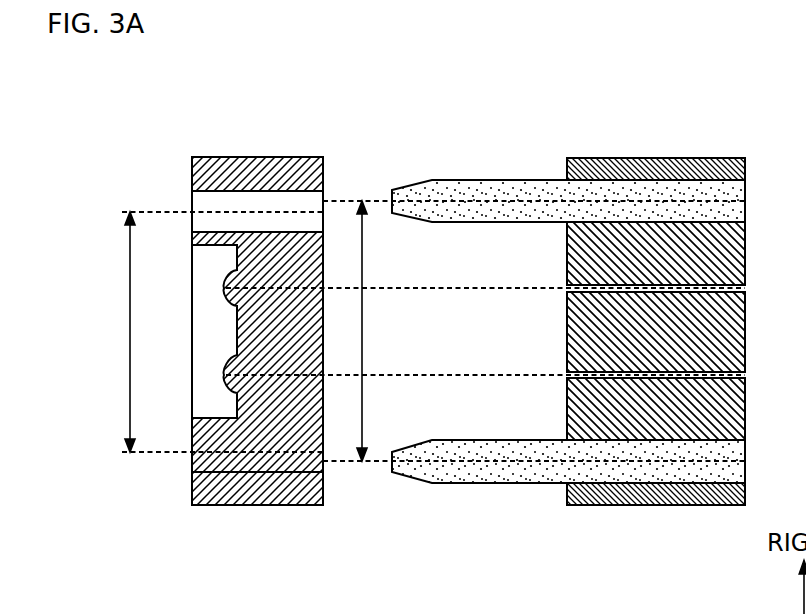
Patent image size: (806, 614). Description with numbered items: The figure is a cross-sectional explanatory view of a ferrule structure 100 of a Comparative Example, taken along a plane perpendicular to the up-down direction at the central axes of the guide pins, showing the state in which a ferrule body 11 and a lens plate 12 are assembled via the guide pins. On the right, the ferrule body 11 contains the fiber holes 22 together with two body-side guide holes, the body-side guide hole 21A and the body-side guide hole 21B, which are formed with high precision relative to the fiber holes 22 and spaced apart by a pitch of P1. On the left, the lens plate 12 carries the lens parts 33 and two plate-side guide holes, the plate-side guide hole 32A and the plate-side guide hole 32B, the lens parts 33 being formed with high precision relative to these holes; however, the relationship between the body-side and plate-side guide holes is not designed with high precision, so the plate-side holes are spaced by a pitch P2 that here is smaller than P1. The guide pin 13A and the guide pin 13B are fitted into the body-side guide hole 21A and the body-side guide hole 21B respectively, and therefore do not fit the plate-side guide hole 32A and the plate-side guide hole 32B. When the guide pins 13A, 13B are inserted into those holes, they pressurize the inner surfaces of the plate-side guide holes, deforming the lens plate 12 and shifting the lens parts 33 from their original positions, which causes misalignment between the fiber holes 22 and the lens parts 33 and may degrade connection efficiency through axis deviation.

The ferrule structure 100 is at (365, 110).
The ferrule body 11 is at (728, 158).
The lens plate 12 is at (228, 157).
The guide pin 13A is at (507, 190).
The guide pin 13B is at (505, 472).
The body-side guide hole 21A is at (677, 180).
The body-side guide hole 21B is at (660, 488).
The fiber holes 22 is at (590, 370).
The plate-side guide hole 32A is at (291, 190).
The plate-side guide hole 32B is at (287, 473).
The lens parts 33 is at (218, 270).